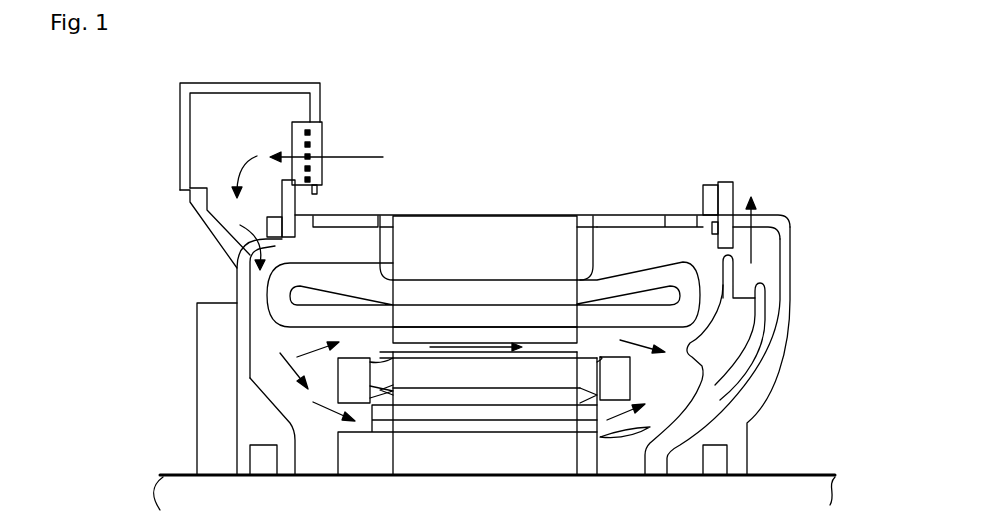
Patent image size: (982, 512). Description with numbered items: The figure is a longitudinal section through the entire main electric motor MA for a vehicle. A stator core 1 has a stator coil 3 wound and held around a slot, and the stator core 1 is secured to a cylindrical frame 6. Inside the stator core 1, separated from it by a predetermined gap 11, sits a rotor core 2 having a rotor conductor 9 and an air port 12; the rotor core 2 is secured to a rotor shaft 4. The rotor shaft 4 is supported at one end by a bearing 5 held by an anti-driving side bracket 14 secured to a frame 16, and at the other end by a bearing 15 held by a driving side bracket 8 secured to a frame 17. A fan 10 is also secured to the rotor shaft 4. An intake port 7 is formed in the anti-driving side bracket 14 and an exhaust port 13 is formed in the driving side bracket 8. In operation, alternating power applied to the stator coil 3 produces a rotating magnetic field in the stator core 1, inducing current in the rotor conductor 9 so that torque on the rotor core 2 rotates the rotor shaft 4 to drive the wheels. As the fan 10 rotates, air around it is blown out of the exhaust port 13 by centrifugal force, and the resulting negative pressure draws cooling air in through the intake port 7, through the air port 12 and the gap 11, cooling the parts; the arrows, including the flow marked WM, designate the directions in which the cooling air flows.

The stator core 1 is at (465, 258).
The rotor core 2 is at (490, 452).
The stator coil 3 is at (333, 277).
The rotor shaft 4 is at (843, 486).
The bearing 5 is at (262, 460).
The cylindrical frame 6 is at (387, 227).
The intake port 7 is at (322, 103).
The driving side bracket 8 is at (740, 418).
The rotor conductor 9 is at (417, 382).
The fan 10 is at (735, 330).
The gap 11 is at (557, 345).
The air port 12 is at (424, 427).
The exhaust port 13 is at (762, 213).
The anti-driving side bracket 14 is at (250, 418).
The bearing 15 is at (723, 459).
The frame 16 is at (300, 213).
The frame 17 is at (681, 222).
The cooling wind (motor side) WM is at (322, 142).
The main electric motor for a vehicle MA is at (531, 214).